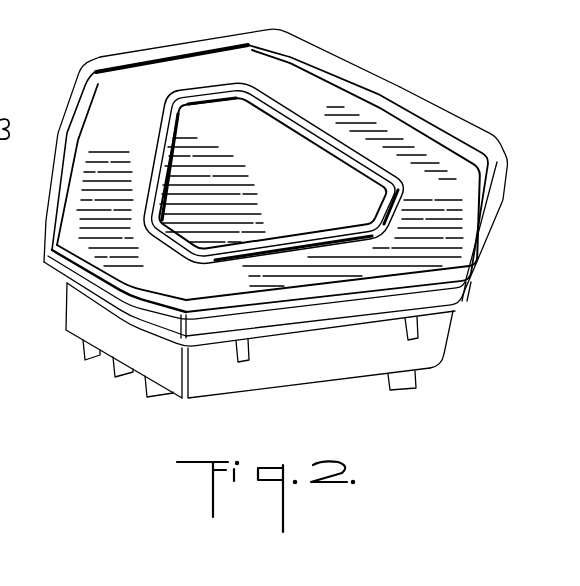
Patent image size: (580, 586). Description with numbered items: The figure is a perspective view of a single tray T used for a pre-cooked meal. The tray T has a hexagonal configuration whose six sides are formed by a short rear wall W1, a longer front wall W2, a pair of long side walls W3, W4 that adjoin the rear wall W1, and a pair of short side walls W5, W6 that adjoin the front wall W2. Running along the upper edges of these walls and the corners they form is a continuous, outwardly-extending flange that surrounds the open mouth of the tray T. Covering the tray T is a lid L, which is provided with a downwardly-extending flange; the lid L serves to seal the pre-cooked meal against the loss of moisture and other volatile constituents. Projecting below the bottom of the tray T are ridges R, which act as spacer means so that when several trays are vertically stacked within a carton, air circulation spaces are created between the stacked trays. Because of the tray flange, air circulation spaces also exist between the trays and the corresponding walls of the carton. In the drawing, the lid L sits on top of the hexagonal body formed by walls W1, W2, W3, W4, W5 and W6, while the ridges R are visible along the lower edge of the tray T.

The rear wall W1 is at (202, 37).
The long side wall W3 is at (415, 97).
The long side wall W4 is at (52, 193).
The lid L is at (308, 92).
The front wall W2 is at (288, 372).
The short side wall W5 is at (455, 337).
The short side wall W6 is at (128, 347).
The ridges R is at (150, 395).
The tray T is at (338, 354).